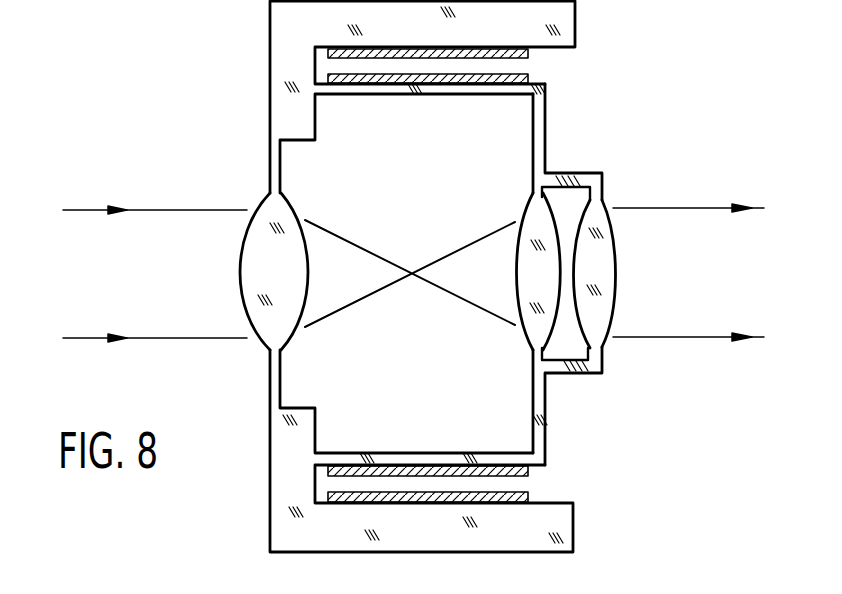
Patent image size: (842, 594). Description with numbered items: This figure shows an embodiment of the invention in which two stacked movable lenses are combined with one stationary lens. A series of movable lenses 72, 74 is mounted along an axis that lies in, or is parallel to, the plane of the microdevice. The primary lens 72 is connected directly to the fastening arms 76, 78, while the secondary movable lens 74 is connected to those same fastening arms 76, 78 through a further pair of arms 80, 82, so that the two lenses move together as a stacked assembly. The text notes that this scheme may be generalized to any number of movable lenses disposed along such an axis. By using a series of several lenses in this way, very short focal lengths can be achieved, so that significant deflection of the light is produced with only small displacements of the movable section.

The primary lens 72 is at (523, 292).
The secondary movable lens 74 is at (613, 272).
The fastening arm 76 is at (537, 128).
The fastening arm 78 is at (537, 399).
The arm 80 is at (580, 178).
The arm 82 is at (569, 376).